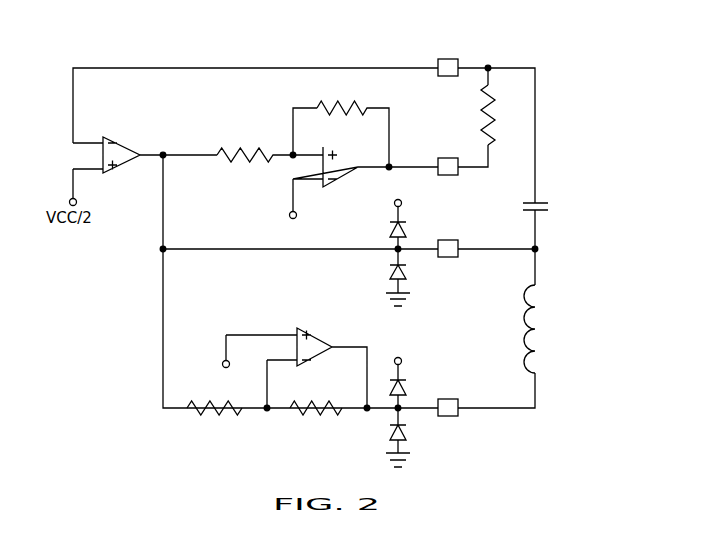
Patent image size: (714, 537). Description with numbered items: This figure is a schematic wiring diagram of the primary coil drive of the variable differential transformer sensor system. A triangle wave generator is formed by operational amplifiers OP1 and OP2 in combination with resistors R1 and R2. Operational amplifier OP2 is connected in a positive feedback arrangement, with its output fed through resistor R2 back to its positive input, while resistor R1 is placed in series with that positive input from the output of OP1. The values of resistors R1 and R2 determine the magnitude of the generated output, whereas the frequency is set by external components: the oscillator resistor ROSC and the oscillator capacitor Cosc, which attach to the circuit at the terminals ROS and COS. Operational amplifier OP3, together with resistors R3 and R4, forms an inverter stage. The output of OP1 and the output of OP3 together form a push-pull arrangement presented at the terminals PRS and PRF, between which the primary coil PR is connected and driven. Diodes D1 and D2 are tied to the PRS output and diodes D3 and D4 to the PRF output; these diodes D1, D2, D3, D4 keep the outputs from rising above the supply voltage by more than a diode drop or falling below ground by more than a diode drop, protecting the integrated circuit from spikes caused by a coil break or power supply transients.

The operational amplifier OP1 is at (118, 148).
The operational amplifier OP2 is at (355, 194).
The operational amplifier OP3 is at (281, 361).
The resistor R1 is at (228, 143).
The resistor R2 is at (341, 124).
The resistor R3 is at (214, 420).
The resistor R4 is at (316, 420).
The oscillator resistor ROSC is at (461, 106).
The oscillator resistor terminal ROS is at (458, 153).
The oscillator capacitor terminal COS is at (446, 56).
The oscillator capacitor Cosc is at (557, 206).
The output terminal PRS is at (460, 260).
The output terminal PRF is at (467, 415).
The primary coil PR is at (544, 329).
The diode D1 is at (400, 221).
The diode D2 is at (387, 277).
The diode D3 is at (410, 372).
The diode D4 is at (412, 437).